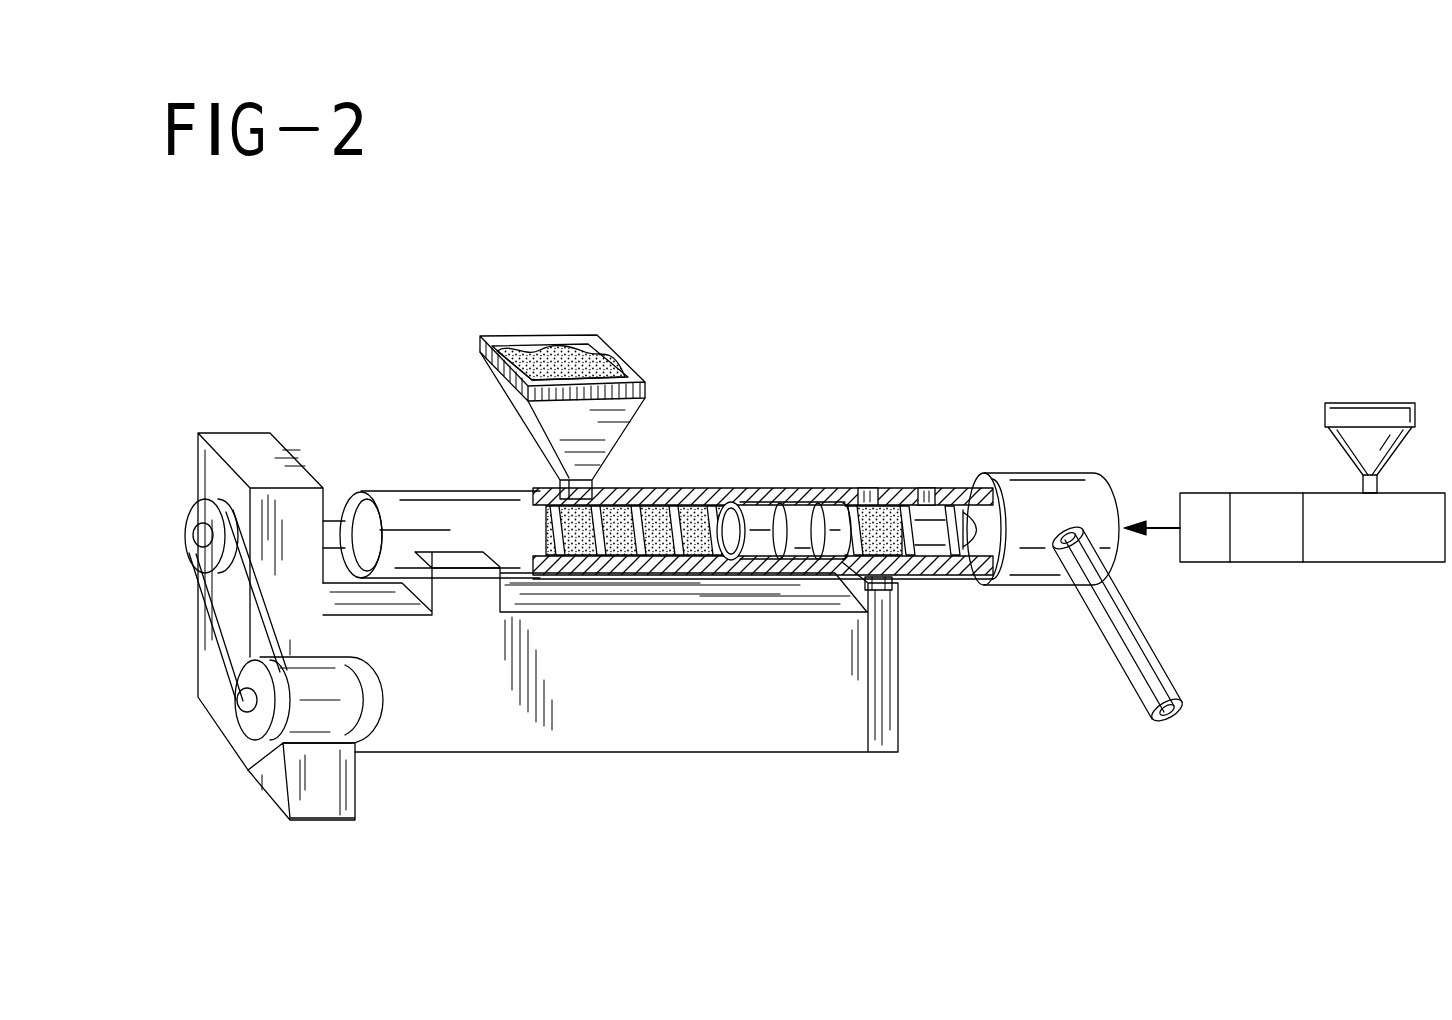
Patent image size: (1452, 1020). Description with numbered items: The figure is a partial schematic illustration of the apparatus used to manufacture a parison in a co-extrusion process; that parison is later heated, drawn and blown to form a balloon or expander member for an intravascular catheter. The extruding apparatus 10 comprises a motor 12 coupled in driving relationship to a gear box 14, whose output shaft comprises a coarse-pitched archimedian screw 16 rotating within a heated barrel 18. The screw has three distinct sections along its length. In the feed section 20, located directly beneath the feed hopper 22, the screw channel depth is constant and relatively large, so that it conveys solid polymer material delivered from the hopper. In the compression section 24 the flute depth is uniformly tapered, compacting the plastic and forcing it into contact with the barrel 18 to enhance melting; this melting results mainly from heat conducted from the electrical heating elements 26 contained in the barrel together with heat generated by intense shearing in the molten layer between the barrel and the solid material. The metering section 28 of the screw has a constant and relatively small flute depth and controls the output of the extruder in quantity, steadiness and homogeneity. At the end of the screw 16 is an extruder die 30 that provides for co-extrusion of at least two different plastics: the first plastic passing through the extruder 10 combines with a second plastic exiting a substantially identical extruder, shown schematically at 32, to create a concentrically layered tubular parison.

The extruding apparatus 10 is at (940, 402).
The motor 12 is at (357, 712).
The gear box 14 is at (248, 447).
The coarse-pitched archimedian screw 16 is at (684, 500).
The heated barrel 18 is at (730, 490).
The feed section 20 is at (636, 503).
The feed hopper 22 is at (482, 347).
The compression section 24 is at (817, 500).
The electrical heating elements 26 is at (789, 503).
The metering section 28 is at (903, 574).
The extruder die 30 is at (1036, 470).
The second extruder 32 is at (1250, 482).